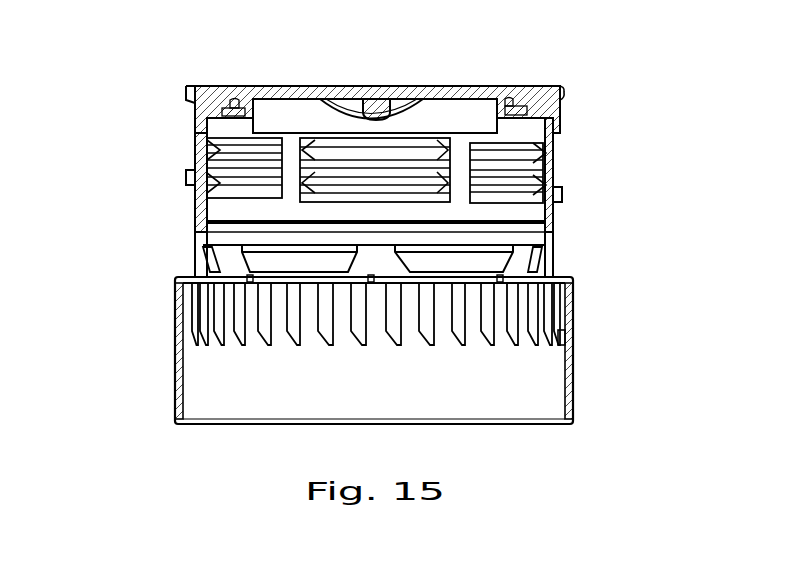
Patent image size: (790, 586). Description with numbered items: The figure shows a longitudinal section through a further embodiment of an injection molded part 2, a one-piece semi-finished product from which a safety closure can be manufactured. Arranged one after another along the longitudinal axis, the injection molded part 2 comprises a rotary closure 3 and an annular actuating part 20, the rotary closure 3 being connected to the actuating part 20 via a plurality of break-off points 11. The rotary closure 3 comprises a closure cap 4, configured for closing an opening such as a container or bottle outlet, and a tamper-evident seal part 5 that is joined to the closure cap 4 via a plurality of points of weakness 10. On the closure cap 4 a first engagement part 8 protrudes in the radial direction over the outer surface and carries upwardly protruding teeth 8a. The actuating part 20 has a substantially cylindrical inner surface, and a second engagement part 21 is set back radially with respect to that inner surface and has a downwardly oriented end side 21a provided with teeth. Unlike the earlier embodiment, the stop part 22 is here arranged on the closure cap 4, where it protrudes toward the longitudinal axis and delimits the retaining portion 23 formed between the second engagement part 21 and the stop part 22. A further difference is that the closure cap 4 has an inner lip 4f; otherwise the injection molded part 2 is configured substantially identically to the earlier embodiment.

The injection molded part 2 is at (592, 77).
The rotary closure 3 is at (59, 83).
The closure cap 4 is at (93, 83).
The inner lip 4f is at (251, 112).
The tamper-evident seal part 5 is at (200, 238).
The first engagement part 8 is at (195, 190).
The teeth 8a is at (186, 177).
The points of weakness 10 is at (512, 220).
The break-off points 11 is at (182, 278).
The actuating part 20 is at (565, 310).
The second engagement part 21 is at (562, 337).
The end side 21a is at (502, 357).
The stop part 22 is at (556, 88).
The retaining portion 23 is at (569, 100).